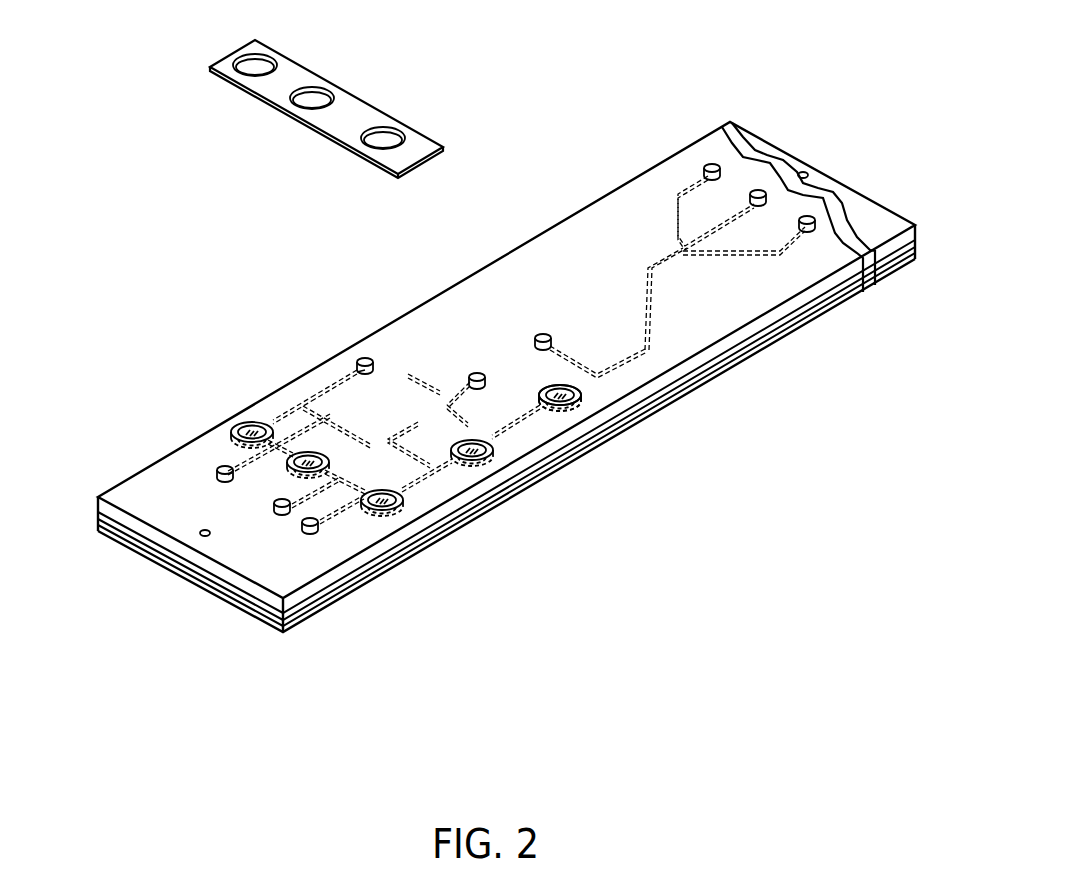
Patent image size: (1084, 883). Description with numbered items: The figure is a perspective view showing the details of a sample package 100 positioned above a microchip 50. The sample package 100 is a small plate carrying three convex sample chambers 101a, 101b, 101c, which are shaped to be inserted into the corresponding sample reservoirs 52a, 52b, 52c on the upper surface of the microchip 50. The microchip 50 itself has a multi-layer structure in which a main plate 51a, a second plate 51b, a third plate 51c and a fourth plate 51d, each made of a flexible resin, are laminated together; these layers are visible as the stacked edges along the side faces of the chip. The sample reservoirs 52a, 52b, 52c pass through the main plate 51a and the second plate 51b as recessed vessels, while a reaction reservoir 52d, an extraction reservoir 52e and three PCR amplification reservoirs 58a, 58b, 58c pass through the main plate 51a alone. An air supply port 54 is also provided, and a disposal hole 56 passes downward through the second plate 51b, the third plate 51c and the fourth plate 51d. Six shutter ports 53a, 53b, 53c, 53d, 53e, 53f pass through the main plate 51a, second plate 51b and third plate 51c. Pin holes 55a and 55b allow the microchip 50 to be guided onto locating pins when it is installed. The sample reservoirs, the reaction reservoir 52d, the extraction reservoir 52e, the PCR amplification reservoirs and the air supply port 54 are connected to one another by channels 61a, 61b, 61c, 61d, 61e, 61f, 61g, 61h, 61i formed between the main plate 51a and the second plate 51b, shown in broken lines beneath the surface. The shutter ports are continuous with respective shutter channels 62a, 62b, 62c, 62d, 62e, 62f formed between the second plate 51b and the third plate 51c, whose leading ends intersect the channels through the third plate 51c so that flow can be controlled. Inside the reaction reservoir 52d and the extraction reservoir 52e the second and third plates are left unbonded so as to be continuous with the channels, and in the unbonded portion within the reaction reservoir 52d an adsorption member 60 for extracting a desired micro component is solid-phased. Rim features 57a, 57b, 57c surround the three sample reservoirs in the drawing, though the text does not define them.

The sample package 100 is at (297, 72).
The sample chamber 101a is at (378, 160).
The sample chamber 101b is at (290, 115).
The sample chamber 101c is at (237, 88).
The microchip 50 is at (697, 410).
The main plate 51a is at (836, 285).
The second plate 51b is at (838, 304).
The third plate 51c is at (808, 320).
The fourth plate 51d is at (774, 347).
The sample reservoir 52a is at (392, 503).
The sample reservoir 52b is at (305, 455).
The sample reservoir 52c is at (253, 425).
The reaction reservoir 52d is at (492, 455).
The extraction reservoir 52e is at (600, 410).
The shutter port 53a is at (313, 530).
The shutter port 53b is at (283, 508).
The shutter port 53c is at (222, 476).
The shutter port 53d is at (407, 375).
The shutter port 53e is at (478, 370).
The shutter port 53f is at (543, 330).
The air supply port 54 is at (362, 352).
The pin hole 55a is at (260, 608).
The pin hole 55b is at (805, 172).
The disposal hole 56 is at (365, 358).
The chamber rim 57a is at (403, 506).
The chamber rim 57b is at (250, 475).
The chamber rim 57c is at (232, 425).
The PCR amplification reservoir 58a is at (812, 213).
The PCR amplification reservoir 58b is at (760, 188).
The PCR amplification reservoir 58c is at (712, 162).
The adsorption member 60 is at (525, 490).
The channel 61a is at (443, 492).
The channel 61b is at (487, 483).
The channel 61c is at (398, 447).
The channel 61d is at (352, 437).
The channel 61e is at (307, 405).
The channel 61f is at (345, 375).
The channel 61g is at (575, 447).
The channel 61h is at (495, 390).
The channel 61i is at (652, 335).
The shutter channel 62a is at (348, 510).
The shutter channel 62b is at (305, 548).
The shutter channel 62c is at (250, 482).
The shutter channel 62d is at (445, 390).
The shutter channel 62e is at (548, 400).
The shutter channel 62f is at (580, 370).